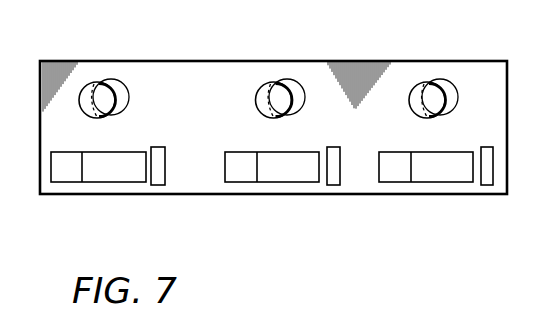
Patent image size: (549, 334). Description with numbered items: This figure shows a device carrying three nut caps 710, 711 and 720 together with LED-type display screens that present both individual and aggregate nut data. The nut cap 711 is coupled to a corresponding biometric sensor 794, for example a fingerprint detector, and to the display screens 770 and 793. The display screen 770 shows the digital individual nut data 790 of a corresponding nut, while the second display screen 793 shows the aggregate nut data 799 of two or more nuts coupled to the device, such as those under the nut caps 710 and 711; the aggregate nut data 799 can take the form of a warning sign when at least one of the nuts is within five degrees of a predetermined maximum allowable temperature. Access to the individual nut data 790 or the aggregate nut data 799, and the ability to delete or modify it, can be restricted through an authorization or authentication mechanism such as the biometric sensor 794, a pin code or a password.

The nut cap 710 is at (92, 82).
The nut cap 711 is at (268, 82).
The nut cap 720 is at (420, 82).
The display screen 770 is at (253, 219).
The individual nut data 790 is at (248, 180).
The second display screen 793 is at (285, 181).
The aggregate nut data 799 is at (303, 180).
The biometric sensor 794 is at (340, 168).